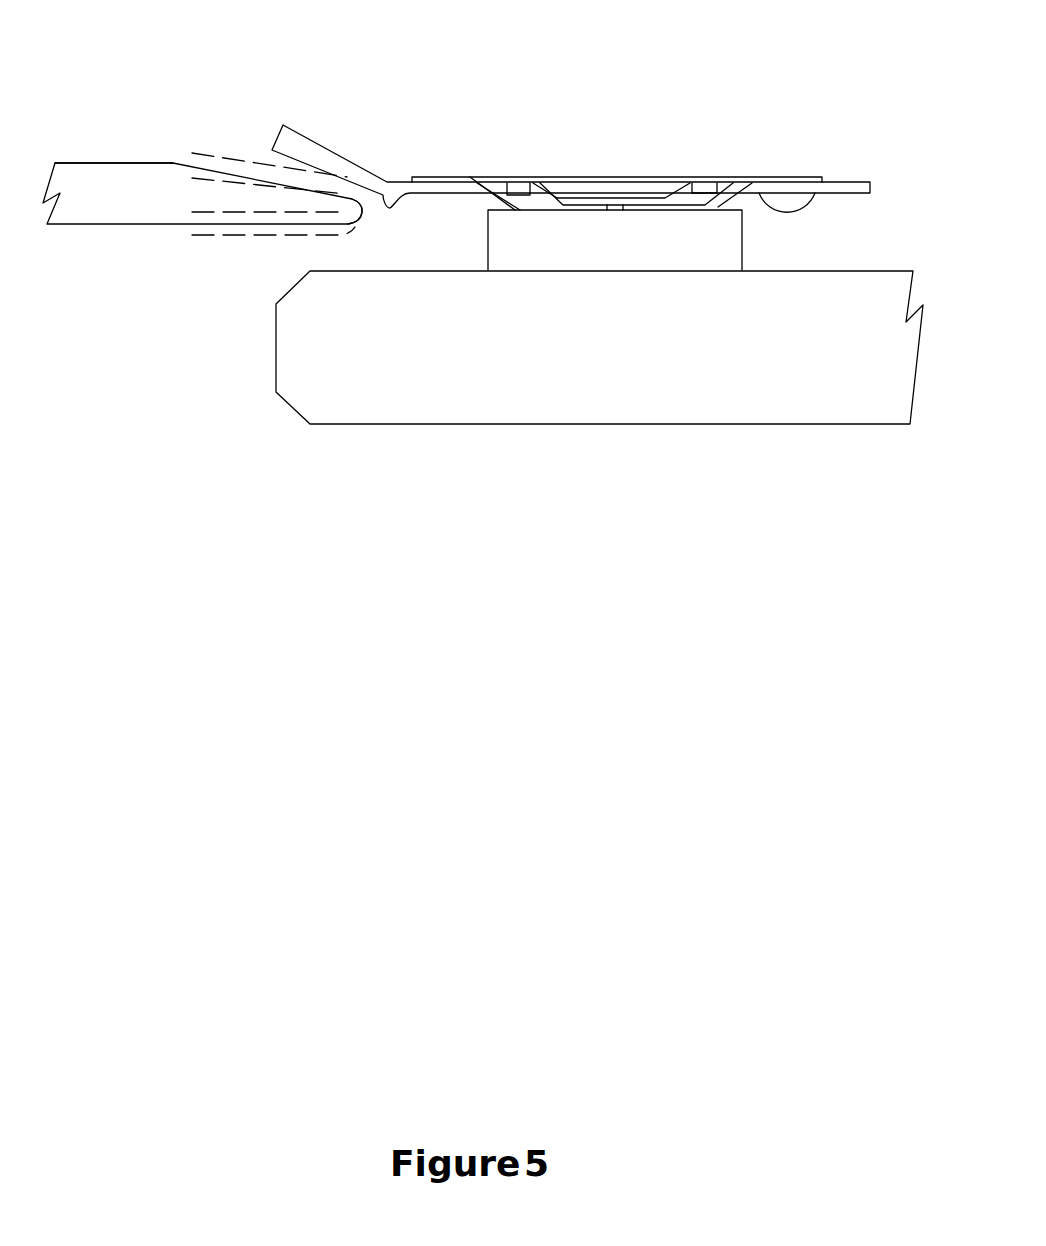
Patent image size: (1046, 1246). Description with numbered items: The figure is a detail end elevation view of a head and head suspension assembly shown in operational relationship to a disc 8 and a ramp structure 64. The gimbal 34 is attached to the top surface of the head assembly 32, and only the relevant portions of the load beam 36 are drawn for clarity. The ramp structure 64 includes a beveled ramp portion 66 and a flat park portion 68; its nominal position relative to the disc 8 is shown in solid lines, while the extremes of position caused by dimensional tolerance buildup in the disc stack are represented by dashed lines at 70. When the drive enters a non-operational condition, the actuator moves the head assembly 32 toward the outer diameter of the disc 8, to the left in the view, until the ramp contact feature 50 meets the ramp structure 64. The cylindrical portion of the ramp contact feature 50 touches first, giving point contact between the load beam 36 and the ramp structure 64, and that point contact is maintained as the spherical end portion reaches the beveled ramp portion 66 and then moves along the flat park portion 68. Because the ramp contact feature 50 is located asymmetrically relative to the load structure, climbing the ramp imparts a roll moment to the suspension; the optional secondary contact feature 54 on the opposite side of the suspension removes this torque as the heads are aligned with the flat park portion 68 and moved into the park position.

The disc 8 is at (403, 425).
The head assembly 32 is at (530, 230).
The gimbal 34 is at (427, 175).
The load beam 36 is at (706, 183).
The ramp contact feature 50 is at (258, 85).
The secondary contact feature 54 is at (818, 143).
The ramp structure 64 is at (80, 225).
The beveled ramp portion 66 is at (290, 181).
The flat park portion 68 is at (83, 162).
The extremes of position of the ramp structure 70 is at (343, 233).